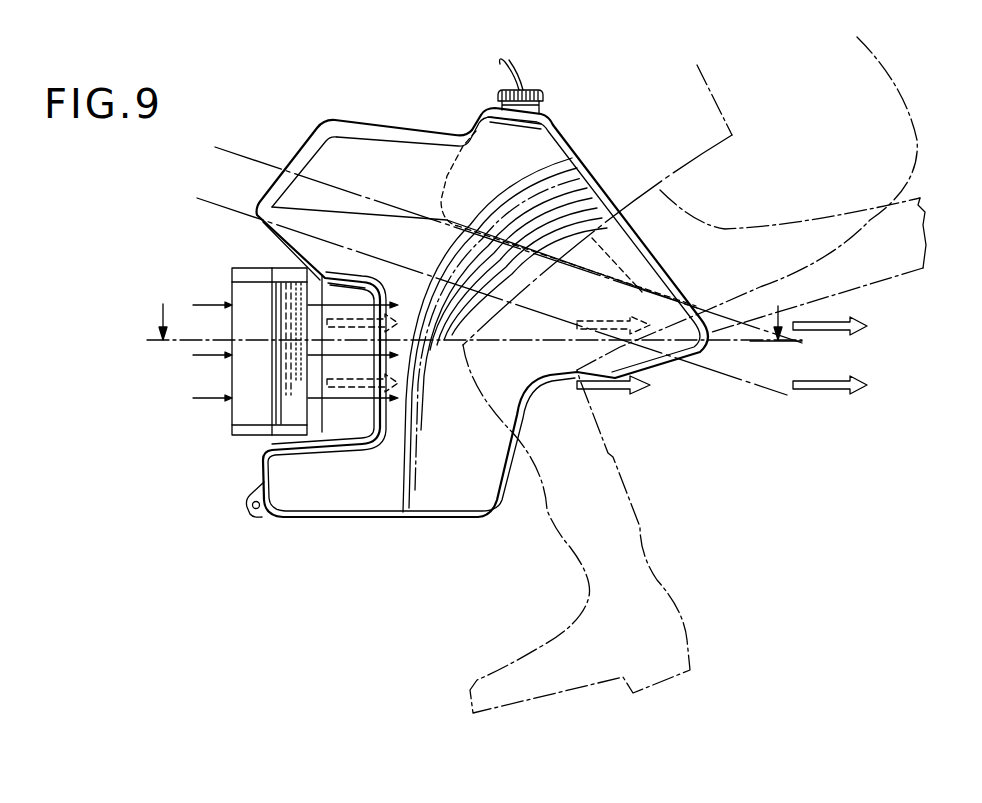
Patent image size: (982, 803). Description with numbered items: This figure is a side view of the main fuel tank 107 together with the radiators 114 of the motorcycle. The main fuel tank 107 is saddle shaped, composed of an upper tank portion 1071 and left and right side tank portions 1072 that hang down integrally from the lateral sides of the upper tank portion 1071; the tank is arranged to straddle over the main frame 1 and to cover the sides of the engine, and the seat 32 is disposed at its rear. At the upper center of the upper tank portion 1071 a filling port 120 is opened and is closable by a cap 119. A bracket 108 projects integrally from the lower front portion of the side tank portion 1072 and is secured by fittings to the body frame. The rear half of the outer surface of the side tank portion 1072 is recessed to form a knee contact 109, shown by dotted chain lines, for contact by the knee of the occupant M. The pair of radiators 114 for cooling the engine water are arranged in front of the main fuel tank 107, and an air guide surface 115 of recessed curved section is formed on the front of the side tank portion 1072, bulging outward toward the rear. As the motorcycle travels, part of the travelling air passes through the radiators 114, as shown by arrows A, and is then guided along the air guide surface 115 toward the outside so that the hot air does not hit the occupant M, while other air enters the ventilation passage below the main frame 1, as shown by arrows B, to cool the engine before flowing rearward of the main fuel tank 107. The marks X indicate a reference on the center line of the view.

The main frame 1 is at (257, 160).
The seat 32 is at (862, 279).
The main fuel tank 107 is at (571, 138).
The upper tank portion 1071 is at (560, 148).
The side tank portion 1072 is at (353, 507).
The bracket 108 is at (262, 513).
The knee contact 109 is at (453, 383).
The radiator 114 is at (248, 418).
The air guide surface 115 is at (336, 293).
The cap 119 is at (527, 87).
The filling port 120 is at (541, 110).
The occupant M is at (722, 107).
The arrows B is at (618, 390).
The arrows A is at (353, 400).
The center line reference X is at (474, 309).